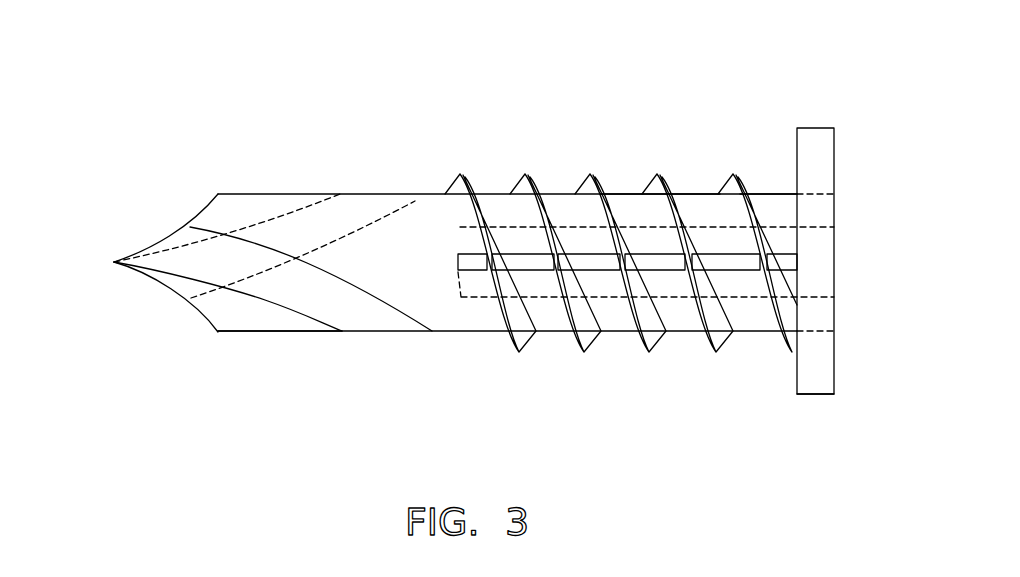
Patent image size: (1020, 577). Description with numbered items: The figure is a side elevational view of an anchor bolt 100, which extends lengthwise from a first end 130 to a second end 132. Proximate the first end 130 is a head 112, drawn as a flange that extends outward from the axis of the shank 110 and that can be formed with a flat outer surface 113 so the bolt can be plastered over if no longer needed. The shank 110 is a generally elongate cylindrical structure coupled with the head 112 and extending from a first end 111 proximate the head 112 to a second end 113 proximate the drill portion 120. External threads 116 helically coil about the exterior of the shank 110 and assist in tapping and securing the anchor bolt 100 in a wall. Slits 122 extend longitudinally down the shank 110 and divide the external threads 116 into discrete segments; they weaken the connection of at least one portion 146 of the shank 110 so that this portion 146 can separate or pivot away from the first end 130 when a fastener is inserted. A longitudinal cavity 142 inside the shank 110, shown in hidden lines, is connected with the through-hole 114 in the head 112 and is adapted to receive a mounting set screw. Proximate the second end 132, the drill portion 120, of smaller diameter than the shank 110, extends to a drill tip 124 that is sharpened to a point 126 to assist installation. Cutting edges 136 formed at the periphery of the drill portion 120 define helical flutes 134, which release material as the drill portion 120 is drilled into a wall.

The anchor bolt 100 is at (592, 92).
The shank 110 is at (628, 193).
The first end 111 is at (773, 193).
The head 112 is at (817, 128).
The second end 113 is at (458, 152).
The through-hole 114 is at (822, 230).
The external threads 116 is at (583, 352).
The drill portion 120 is at (258, 333).
The slits 122 is at (458, 254).
The drill tip 124 is at (191, 298).
The point 126 is at (132, 257).
The first end 130 is at (852, 410).
The second end 132 is at (150, 198).
The helical flutes 134 is at (372, 333).
The cutting edges 136 is at (358, 285).
The longitudinal cavity 142 is at (710, 234).
The portion of the shank 146 is at (675, 322).